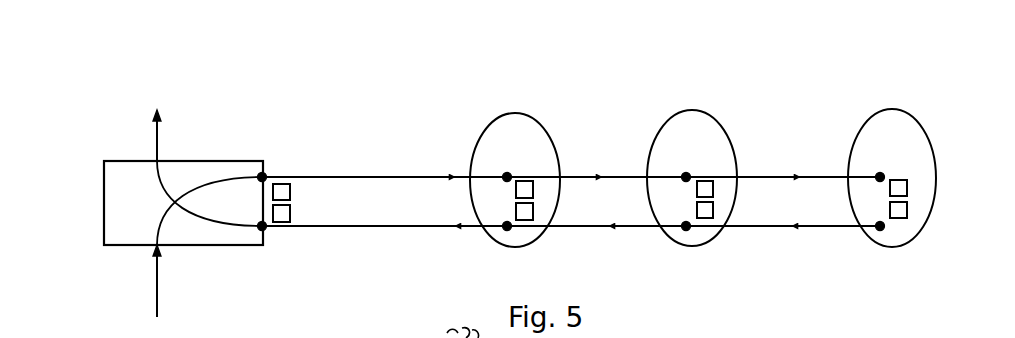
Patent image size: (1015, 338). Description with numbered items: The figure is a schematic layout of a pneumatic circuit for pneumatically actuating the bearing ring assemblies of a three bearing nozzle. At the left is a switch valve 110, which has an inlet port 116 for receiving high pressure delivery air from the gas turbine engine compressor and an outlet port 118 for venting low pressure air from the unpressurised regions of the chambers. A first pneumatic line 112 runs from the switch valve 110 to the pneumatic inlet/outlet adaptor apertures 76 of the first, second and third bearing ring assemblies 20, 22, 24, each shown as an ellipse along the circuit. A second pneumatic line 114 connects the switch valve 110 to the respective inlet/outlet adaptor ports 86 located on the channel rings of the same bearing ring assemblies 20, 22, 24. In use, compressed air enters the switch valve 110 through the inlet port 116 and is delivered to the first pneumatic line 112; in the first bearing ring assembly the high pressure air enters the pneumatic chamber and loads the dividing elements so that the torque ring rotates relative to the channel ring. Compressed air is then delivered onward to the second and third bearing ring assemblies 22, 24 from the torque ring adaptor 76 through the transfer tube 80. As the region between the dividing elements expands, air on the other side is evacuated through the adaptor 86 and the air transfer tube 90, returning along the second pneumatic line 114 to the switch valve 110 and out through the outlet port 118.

The switch valve 110 is at (223, 161).
The first pneumatic line 112 is at (353, 177).
The second pneumatic line 114 is at (366, 208).
The inlet port 116 is at (157, 290).
The outlet port 118 is at (157, 138).
The air transfer tube 90 is at (424, 176).
The transfer tube 80 is at (620, 176).
The first node 20 is at (543, 122).
The second node 22 is at (718, 120).
The third node 24 is at (922, 120).
The pneumatic inlet/outlet adaptor aperture 76 is at (533, 192).
The inlet/outlet adaptor port 86 is at (533, 210).